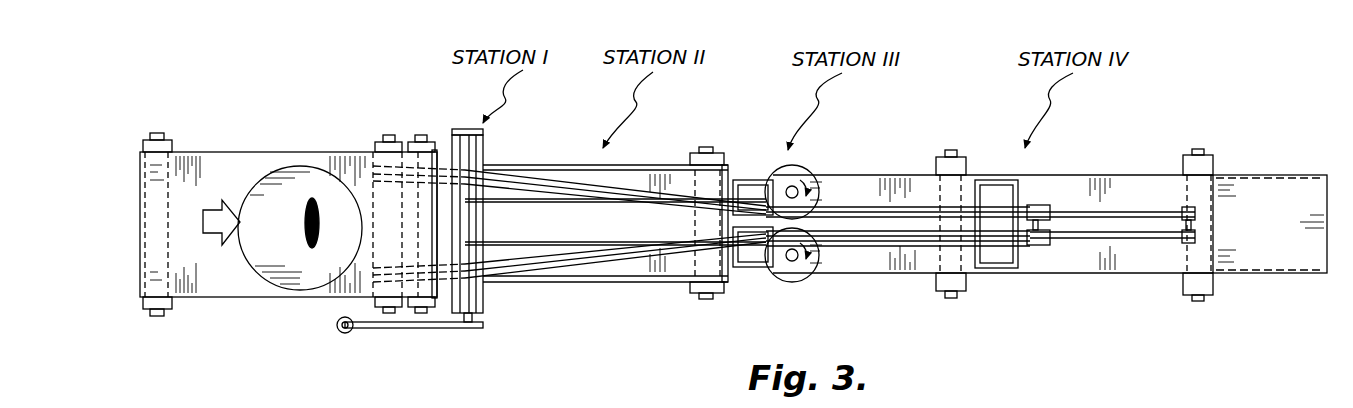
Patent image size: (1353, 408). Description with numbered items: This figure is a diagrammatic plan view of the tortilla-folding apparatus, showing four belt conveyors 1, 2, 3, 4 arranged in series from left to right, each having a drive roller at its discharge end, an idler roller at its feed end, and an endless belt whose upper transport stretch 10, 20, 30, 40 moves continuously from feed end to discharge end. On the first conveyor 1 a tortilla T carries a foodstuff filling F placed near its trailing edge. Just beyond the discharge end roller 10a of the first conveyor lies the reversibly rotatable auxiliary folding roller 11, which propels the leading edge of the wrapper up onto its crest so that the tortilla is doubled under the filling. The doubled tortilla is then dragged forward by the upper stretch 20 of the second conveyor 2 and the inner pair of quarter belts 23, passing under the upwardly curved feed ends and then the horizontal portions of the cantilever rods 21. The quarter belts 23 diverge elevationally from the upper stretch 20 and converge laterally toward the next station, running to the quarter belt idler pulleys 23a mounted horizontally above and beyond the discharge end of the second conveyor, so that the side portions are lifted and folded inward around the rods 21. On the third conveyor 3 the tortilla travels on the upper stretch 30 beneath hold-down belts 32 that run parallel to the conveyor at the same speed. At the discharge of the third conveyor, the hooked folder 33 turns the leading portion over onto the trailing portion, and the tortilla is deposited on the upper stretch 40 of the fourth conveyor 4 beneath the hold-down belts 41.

The belt conveyor 1 is at (288, 308).
The upper transport stretch 10 is at (243, 163).
The discharge end roller 10a is at (417, 308).
The tortilla T is at (282, 187).
The foodstuff filling F is at (318, 223).
The auxiliary folding roller 11 is at (485, 148).
The second conveyor 2 is at (627, 288).
The upper stretch 20 is at (533, 235).
The cantilever rods 21 is at (532, 200).
The quarter belts 23 is at (447, 187).
The quarter belt idler pulleys 23a is at (800, 166).
The third conveyor 3 is at (898, 278).
The upper stretch 30 is at (873, 178).
The hold-down belts 32 is at (888, 243).
The hooked folder 33 is at (997, 278).
The fourth conveyor 4 is at (1125, 278).
The upper stretch 40 is at (1135, 185).
The hold-down belts 41 is at (1063, 210).